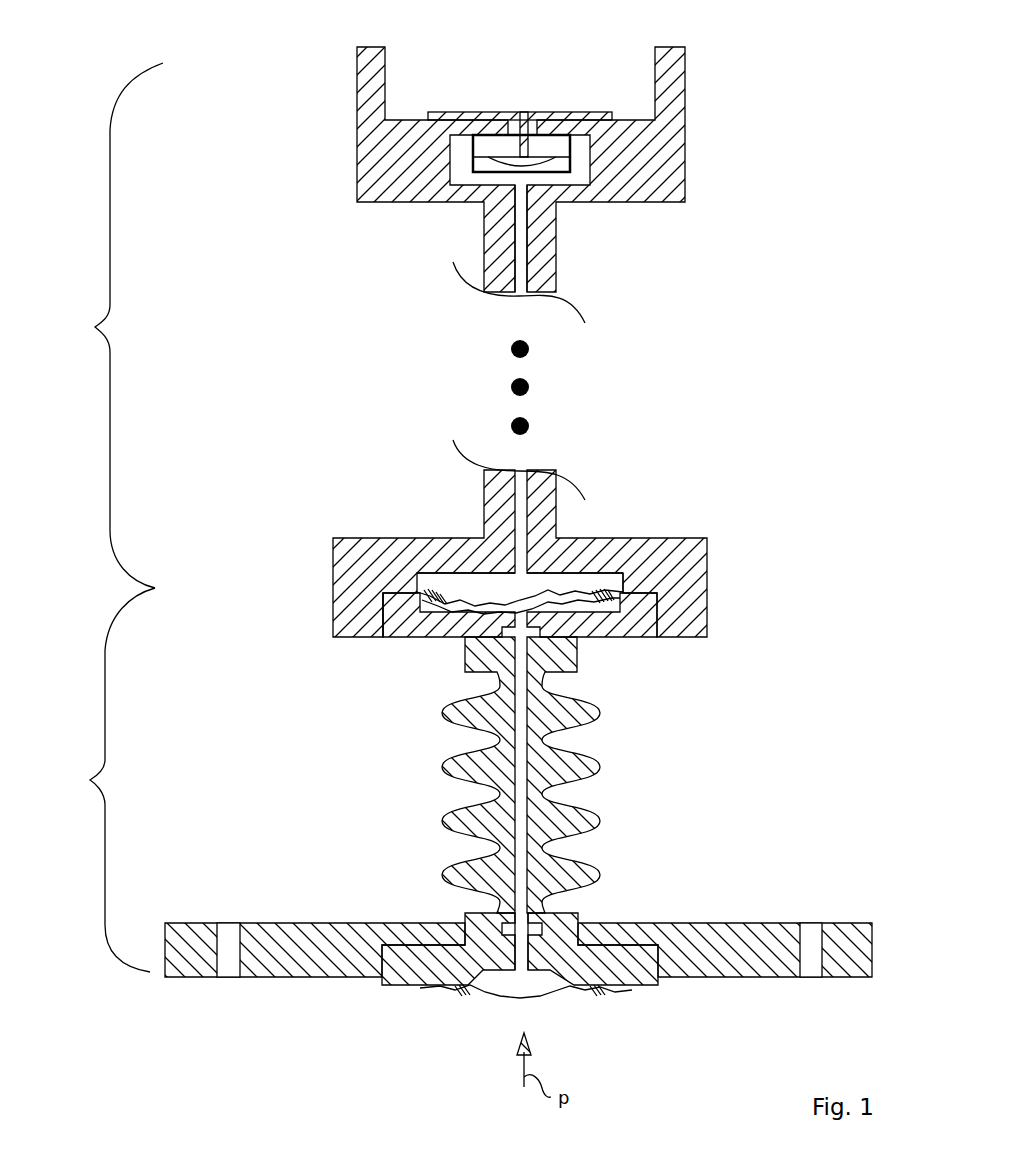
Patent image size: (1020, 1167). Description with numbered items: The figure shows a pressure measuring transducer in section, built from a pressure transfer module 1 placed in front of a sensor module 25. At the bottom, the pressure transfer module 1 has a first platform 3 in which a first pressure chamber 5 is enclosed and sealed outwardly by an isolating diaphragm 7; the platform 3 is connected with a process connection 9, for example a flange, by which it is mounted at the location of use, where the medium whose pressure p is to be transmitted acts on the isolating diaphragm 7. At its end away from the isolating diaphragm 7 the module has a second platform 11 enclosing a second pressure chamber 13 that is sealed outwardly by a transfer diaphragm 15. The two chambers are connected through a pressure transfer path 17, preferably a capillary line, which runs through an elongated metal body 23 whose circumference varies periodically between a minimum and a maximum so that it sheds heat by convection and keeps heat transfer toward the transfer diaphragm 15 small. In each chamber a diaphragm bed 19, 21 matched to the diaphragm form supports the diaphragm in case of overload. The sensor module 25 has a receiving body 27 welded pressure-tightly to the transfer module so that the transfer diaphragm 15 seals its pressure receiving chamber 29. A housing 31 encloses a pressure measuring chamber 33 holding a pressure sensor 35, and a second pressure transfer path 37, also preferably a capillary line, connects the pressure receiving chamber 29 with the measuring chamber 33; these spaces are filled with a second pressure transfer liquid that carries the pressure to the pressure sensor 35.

The pressure transfer module 1 is at (103, 780).
The first platform 3 is at (400, 990).
The first pressure chamber 5 is at (557, 987).
The isolating diaphragm 7 is at (498, 988).
The process connection 9 is at (270, 977).
The second platform 11 is at (593, 620).
The second pressure chamber 13 is at (543, 595).
The transfer diaphragm 15 is at (513, 592).
The pressure transfer path 17 is at (510, 815).
The diaphragm bed 19 is at (487, 970).
The diaphragm bed 21 is at (483, 607).
The elongated body 23 is at (582, 822).
The sensor module 25 is at (105, 325).
The receiving body 27 is at (345, 572).
The pressure receiving chamber 29 is at (437, 583).
The housing 31 is at (375, 158).
The pressure measuring chamber 33 is at (467, 145).
The pressure sensor 35 is at (547, 145).
The pressure transfer path 37 is at (521, 237).